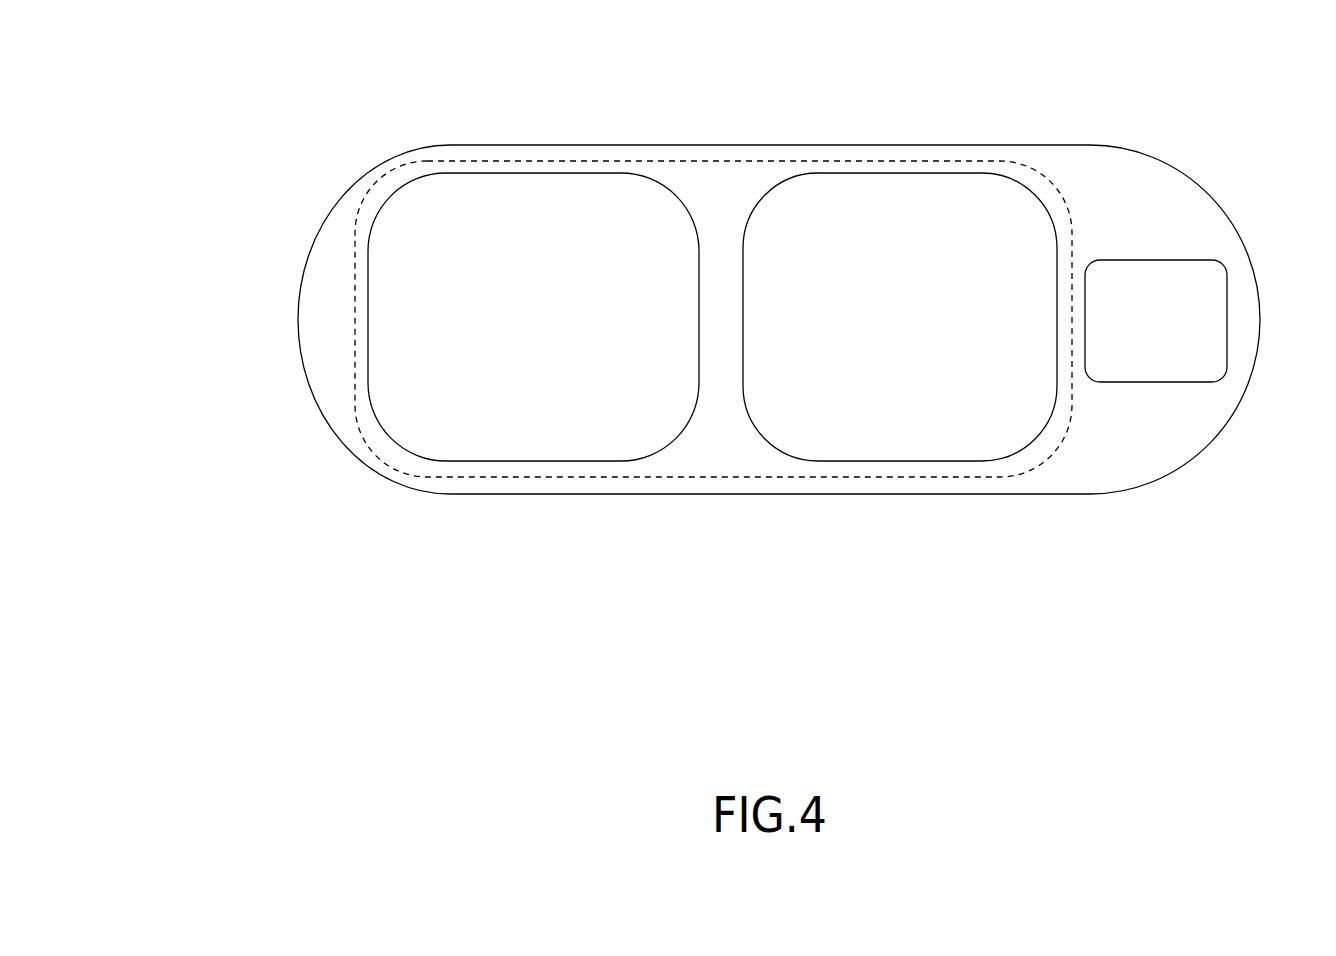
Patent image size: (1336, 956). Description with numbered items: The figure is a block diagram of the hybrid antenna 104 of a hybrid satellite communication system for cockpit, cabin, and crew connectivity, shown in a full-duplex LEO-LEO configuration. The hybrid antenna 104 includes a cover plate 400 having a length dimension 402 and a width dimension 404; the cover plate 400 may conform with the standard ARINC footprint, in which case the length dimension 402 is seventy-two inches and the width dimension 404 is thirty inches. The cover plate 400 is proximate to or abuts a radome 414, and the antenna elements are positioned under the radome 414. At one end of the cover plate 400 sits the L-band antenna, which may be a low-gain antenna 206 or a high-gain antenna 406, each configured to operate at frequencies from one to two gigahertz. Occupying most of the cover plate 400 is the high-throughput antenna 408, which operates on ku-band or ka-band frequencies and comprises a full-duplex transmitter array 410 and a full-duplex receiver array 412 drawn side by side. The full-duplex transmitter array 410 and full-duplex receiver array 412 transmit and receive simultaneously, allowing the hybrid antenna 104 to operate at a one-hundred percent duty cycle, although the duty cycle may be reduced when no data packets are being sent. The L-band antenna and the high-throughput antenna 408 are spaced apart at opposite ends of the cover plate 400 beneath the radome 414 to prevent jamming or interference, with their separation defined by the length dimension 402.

The hybrid antenna 104 is at (246, 82).
The low-gain antenna 206 is at (1156, 321).
The cover plate 400 is at (752, 319).
The length dimension 402 is at (1262, 98).
The width dimension 404 is at (278, 146).
The high-gain antenna 406 is at (1200, 331).
The high-throughput antenna 408 is at (1058, 434).
The full-duplex transmitter array 410 is at (554, 331).
The full-duplex receiver array 412 is at (917, 331).
The radome 414 is at (752, 319).